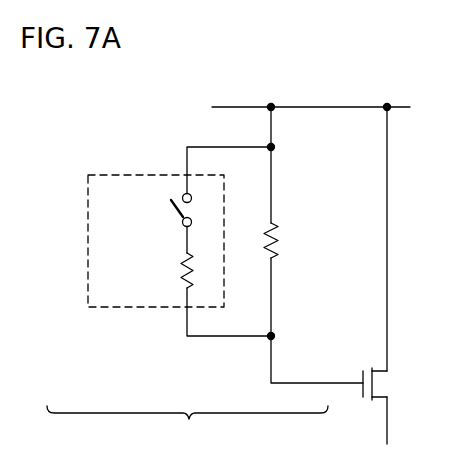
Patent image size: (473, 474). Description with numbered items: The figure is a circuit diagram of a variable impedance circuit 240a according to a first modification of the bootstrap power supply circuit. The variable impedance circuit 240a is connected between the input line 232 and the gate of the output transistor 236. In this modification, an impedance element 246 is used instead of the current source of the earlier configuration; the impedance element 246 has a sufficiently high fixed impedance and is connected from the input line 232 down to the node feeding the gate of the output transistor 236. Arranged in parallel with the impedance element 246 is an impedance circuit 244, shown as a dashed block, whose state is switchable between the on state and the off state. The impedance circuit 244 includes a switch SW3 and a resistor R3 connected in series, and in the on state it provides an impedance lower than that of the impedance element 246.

The input line 232 is at (330, 105).
The impedance circuit 244 is at (123, 241).
The switch SW3 is at (173, 221).
The resistor R3 is at (159, 270).
The impedance element 246 is at (283, 243).
The output transistor 236 is at (393, 382).
The variable impedance circuit 240a is at (187, 428).